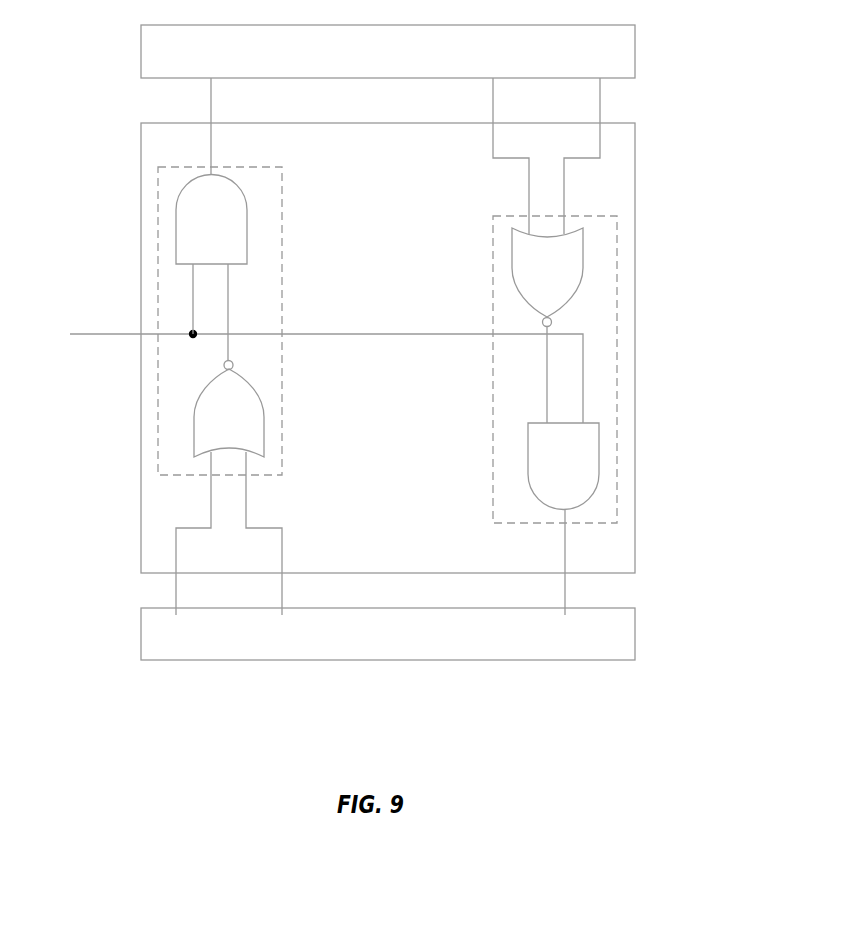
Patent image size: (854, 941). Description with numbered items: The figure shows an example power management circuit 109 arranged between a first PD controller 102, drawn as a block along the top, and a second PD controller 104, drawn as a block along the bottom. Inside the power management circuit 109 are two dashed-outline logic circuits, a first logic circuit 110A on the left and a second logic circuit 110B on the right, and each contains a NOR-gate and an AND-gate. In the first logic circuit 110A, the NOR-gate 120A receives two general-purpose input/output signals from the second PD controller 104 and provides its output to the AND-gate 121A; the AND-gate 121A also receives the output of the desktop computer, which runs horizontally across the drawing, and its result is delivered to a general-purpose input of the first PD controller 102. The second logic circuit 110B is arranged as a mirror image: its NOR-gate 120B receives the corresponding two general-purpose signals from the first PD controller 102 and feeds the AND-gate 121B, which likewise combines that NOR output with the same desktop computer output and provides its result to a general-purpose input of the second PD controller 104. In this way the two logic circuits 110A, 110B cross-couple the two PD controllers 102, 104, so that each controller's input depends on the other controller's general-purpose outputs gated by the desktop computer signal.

The first PD controller 102 is at (635, 43).
The second PD controller 104 is at (635, 638).
The power management circuit 109 is at (635, 335).
The first logic circuit 110A is at (265, 309).
The second logic circuit 110B is at (512, 376).
The NOR-gate 120A is at (264, 435).
The NOR-gate 120B is at (512, 246).
The AND-gate 121A is at (237, 183).
The AND-gate 121B is at (537, 497).